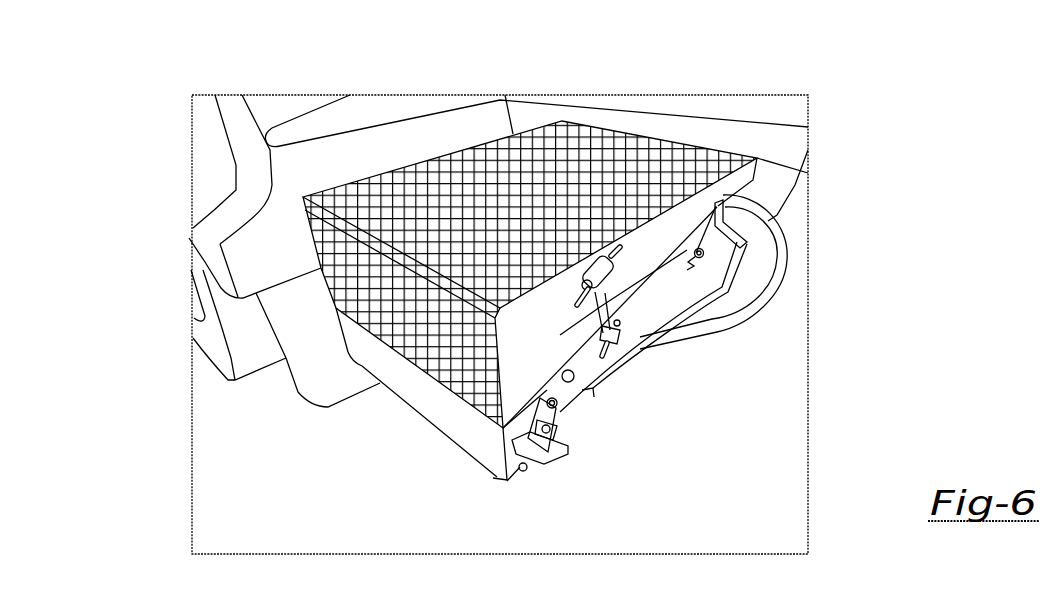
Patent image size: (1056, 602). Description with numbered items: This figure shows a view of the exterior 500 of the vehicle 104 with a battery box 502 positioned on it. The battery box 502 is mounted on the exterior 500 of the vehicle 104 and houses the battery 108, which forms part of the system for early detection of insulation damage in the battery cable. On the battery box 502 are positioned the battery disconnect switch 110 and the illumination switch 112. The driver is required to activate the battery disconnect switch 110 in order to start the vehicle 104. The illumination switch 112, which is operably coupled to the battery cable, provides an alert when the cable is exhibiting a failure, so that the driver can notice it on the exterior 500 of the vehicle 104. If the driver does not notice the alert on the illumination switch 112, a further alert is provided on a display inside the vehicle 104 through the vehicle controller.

The vehicle 104 is at (235, 115).
The battery 108 is at (411, 80).
The exterior 500 is at (595, 80).
The battery box 502 is at (618, 163).
The battery disconnect switch 110 is at (556, 463).
The illumination switch 112 is at (575, 374).